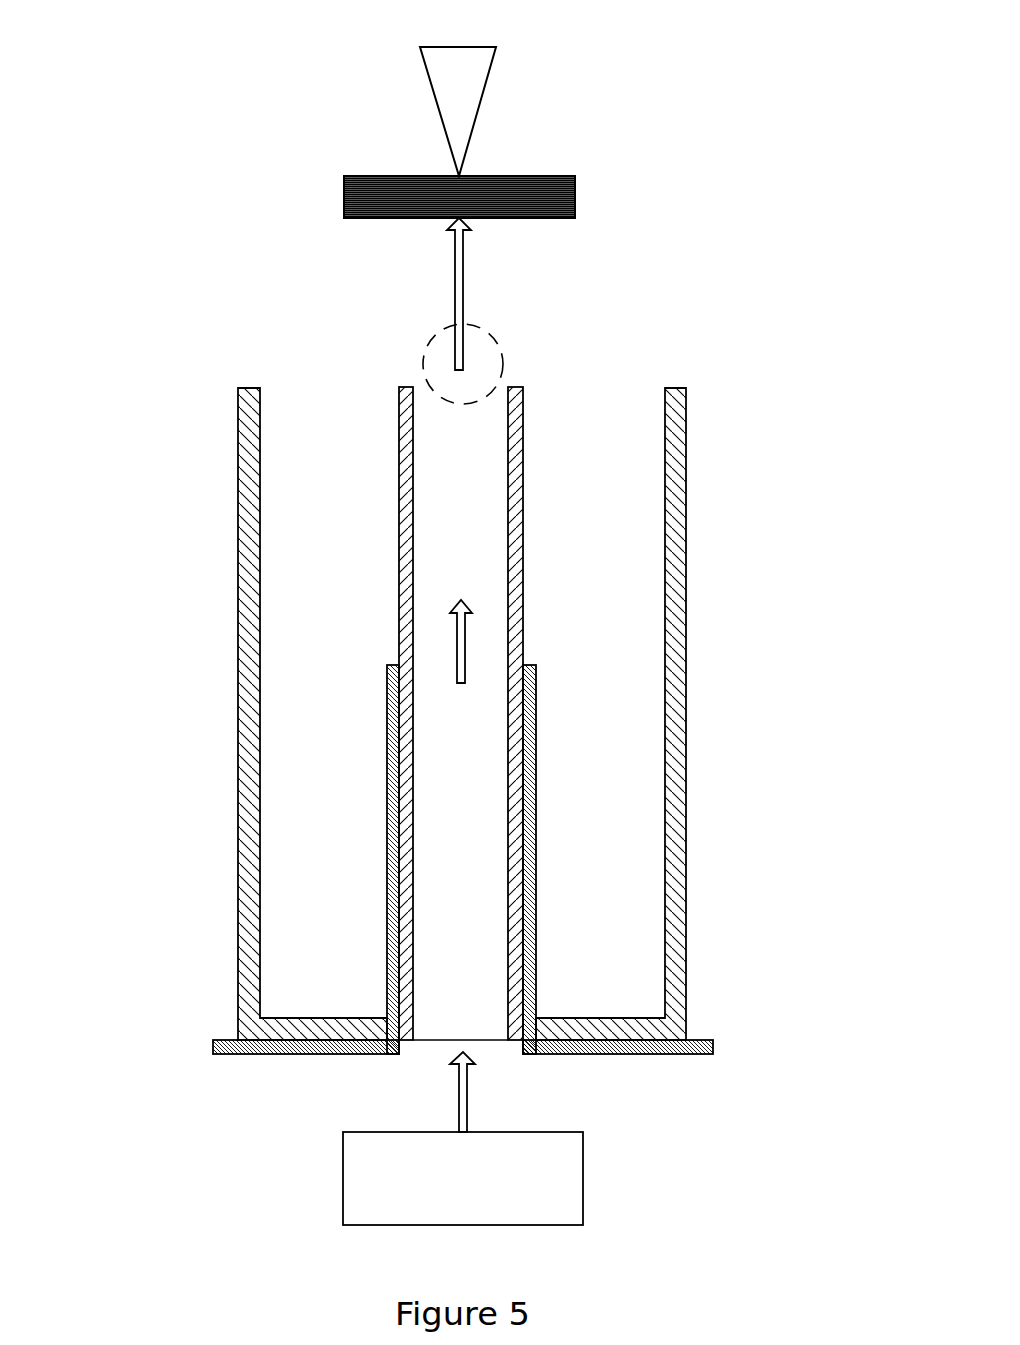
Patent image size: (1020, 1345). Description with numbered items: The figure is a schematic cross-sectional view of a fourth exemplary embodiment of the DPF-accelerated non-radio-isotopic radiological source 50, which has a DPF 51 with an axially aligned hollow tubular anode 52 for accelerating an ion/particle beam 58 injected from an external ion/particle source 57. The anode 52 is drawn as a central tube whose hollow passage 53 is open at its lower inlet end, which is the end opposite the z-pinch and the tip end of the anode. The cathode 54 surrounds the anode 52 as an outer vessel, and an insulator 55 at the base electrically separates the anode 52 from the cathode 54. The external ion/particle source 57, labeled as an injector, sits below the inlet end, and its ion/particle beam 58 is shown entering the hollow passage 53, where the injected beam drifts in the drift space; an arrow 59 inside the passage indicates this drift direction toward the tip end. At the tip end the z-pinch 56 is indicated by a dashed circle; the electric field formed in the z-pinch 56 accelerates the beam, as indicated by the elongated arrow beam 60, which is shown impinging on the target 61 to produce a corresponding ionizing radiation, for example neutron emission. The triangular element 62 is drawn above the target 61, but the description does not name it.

The DPF-accelerated non-radio-isotopic radiological source 50 is at (205, 172).
The DPF 51 is at (165, 713).
The hollow tubular anode 52 is at (399, 568).
The hollow passage 53 is at (472, 824).
The cathode 54 is at (238, 611).
The insulator 55 is at (340, 1056).
The z-pinch 56 is at (419, 372).
The external ion/particle source 57 is at (343, 1150).
The ion/particle beam 58 is at (469, 1077).
The particle flow direction 59 is at (465, 625).
The elongated arrow beam 60 is at (457, 239).
The target 61 is at (555, 176).
The focusing element 62 is at (437, 104).